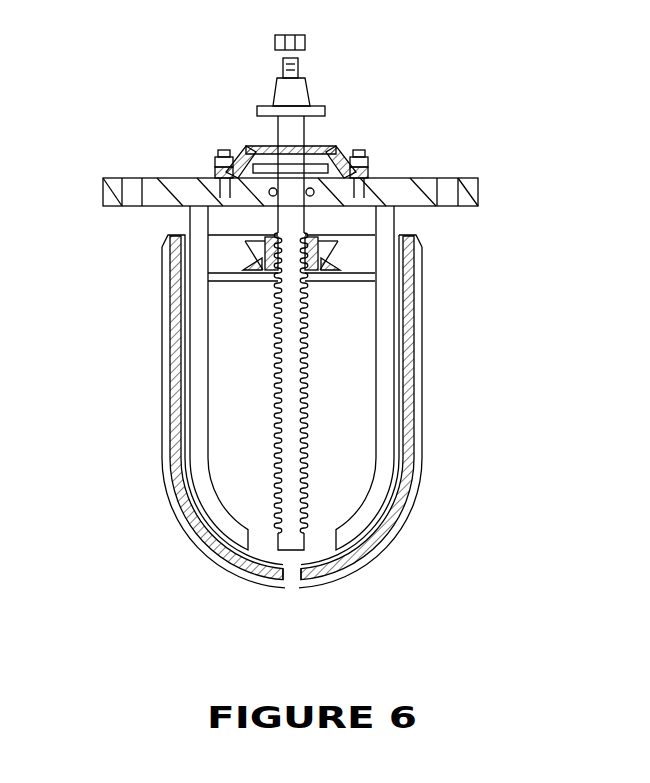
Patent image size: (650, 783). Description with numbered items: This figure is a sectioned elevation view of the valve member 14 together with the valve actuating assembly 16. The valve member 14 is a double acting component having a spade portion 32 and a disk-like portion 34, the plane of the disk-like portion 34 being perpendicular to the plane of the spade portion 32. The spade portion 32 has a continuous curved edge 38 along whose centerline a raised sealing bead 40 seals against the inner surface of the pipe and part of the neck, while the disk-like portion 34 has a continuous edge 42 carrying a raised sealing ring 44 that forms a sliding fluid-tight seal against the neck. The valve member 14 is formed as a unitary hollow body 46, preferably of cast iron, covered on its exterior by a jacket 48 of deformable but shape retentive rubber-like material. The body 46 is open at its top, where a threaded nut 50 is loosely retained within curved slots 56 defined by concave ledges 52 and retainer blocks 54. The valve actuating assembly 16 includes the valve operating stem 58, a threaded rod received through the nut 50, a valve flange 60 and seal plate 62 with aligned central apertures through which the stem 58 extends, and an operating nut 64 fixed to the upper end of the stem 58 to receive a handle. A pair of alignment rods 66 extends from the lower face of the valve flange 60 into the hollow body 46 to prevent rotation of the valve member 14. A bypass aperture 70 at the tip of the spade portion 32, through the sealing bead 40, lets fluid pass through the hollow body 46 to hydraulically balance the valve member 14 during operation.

The valve member 14 is at (442, 427).
The valve actuating assembly 16 is at (411, 129).
The spade portion 32 is at (432, 487).
The disk-like portion 34 is at (422, 230).
The continuous curved edge 38 is at (433, 408).
The raised sealing bead 40 is at (167, 417).
The continuous edge 42 is at (162, 244).
The raised sealing ring 44 is at (492, 220).
The hollow body 46 is at (173, 410).
The jacket 48 is at (167, 360).
The threaded nut 50 is at (250, 262).
The concave ledges 52 is at (363, 260).
The retainer blocks 54 is at (433, 250).
The curved slots 56 is at (163, 267).
The valve operating stem 58 is at (298, 330).
The valve flange 60 is at (259, 157).
The seal plate 62 is at (237, 136).
The operating nut 64 is at (295, 91).
The alignment rods 66 is at (385, 358).
The bypass aperture 70 is at (345, 595).